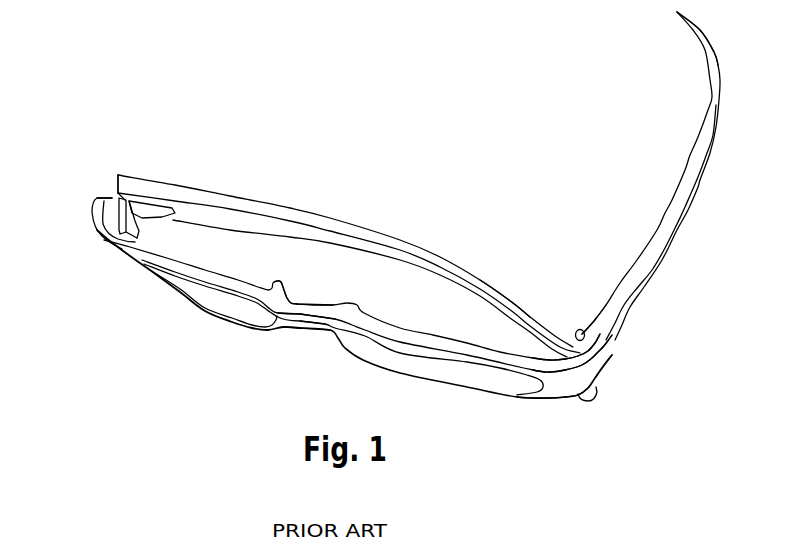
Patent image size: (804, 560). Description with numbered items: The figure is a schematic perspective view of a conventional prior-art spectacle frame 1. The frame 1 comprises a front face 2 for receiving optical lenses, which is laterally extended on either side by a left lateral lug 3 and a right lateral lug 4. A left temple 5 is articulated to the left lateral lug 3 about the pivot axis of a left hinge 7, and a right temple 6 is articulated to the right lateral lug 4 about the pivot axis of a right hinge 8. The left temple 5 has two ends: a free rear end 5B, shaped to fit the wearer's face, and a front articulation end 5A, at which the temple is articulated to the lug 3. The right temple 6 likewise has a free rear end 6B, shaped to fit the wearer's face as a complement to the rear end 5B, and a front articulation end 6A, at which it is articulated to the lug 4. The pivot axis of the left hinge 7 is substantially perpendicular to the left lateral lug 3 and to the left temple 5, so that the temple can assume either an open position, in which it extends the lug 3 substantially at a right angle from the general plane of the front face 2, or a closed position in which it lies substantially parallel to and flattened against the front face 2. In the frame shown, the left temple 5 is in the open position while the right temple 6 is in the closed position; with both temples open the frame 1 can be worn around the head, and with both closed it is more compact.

The spectacle frame 1 is at (178, 306).
The front face 2 is at (297, 310).
The left lateral lug 3 is at (577, 358).
The right lateral lug 4 is at (97, 211).
The left temple 5 is at (635, 275).
The front articulation end 5A is at (602, 330).
The free rear end 5B is at (708, 58).
The right temple 6 is at (227, 220).
The front articulation end 6A is at (128, 183).
The free rear end 6B is at (490, 308).
The left hinge 7 is at (595, 323).
The right hinge 8 is at (146, 215).